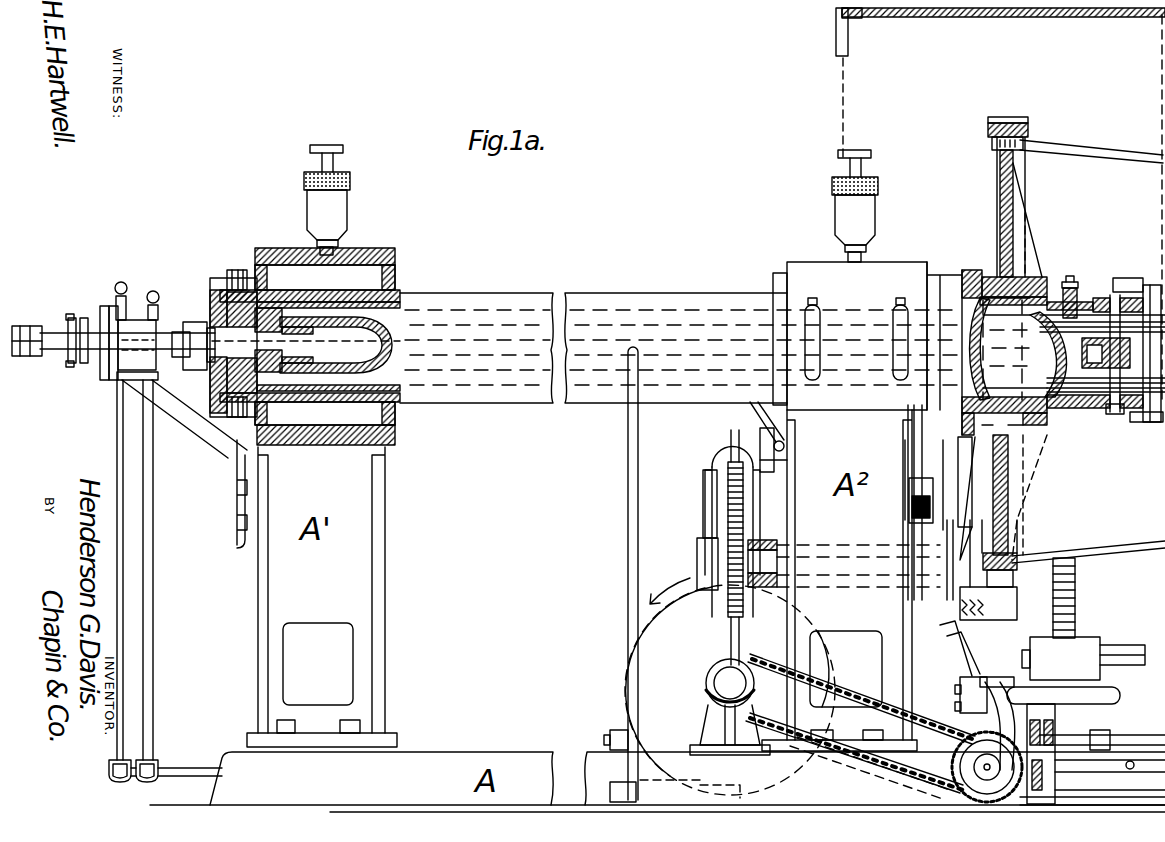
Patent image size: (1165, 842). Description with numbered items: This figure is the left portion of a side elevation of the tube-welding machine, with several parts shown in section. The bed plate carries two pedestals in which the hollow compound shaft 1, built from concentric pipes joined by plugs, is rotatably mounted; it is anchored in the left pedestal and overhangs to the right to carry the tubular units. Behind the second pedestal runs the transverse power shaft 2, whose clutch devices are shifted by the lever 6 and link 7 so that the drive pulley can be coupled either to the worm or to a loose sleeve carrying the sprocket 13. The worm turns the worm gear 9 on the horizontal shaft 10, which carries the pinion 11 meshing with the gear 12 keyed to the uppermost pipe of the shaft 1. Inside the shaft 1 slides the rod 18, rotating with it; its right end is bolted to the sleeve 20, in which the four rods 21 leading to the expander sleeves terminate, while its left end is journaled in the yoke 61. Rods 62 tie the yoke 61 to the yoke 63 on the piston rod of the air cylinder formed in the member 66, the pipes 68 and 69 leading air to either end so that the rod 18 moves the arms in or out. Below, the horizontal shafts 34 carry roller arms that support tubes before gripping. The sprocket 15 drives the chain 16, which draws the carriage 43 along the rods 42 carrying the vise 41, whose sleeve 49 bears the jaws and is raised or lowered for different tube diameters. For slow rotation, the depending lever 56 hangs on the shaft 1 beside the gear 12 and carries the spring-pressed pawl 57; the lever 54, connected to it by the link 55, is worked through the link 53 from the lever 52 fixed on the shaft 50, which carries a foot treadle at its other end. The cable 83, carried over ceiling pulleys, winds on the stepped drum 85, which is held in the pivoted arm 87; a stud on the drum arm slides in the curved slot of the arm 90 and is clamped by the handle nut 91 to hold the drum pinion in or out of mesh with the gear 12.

The shaft 1 is at (455, 294).
The power shaft 2 is at (718, 699).
The lever 6 is at (628, 514).
The link 7 is at (620, 730).
The worm gear 9 is at (732, 494).
The horizontally disposed shaft 10 is at (768, 548).
The pinion 11 is at (1010, 600).
The gear 12 is at (1020, 167).
The sprocket 13 is at (718, 681).
The sprocket 15 is at (966, 764).
The chain 16 is at (1128, 740).
The rod 18 is at (1080, 318).
The sleeve 20 is at (1103, 298).
The rods 21 is at (1150, 300).
The shafts 34 is at (1148, 660).
The vise 41 is at (1078, 640).
The rods 42 is at (1130, 705).
The carriage 43 is at (1042, 770).
The sleeve 49 is at (1073, 358).
The shaft 50 is at (1132, 770).
The lever 52 is at (988, 686).
The link 53 is at (962, 684).
The lever 54 is at (955, 642).
The link 55 is at (966, 532).
The depending lever 56 is at (948, 294).
The pawl 57 is at (1008, 620).
The yoke 61 is at (178, 330).
The rods 62 is at (63, 347).
The yoke 63 is at (78, 334).
The member 66 is at (142, 320).
The pipe 68 is at (117, 428).
The pipe 69 is at (186, 536).
The cable 83 is at (958, 16).
The drum 85 is at (910, 486).
The arm 87 is at (912, 446).
The arm 90 is at (783, 464).
The handle nut 91 is at (752, 422).